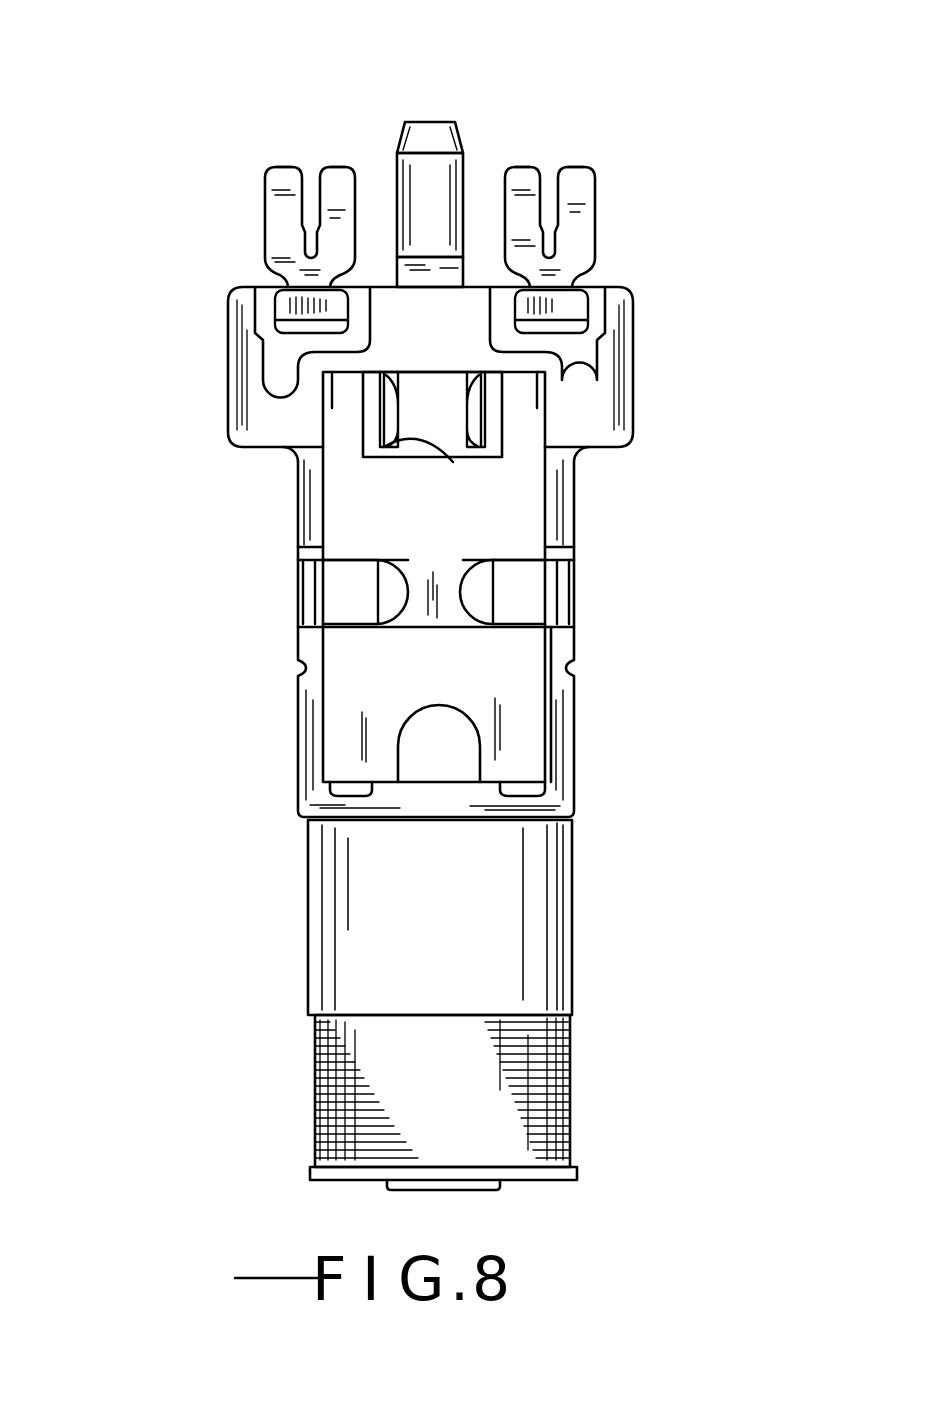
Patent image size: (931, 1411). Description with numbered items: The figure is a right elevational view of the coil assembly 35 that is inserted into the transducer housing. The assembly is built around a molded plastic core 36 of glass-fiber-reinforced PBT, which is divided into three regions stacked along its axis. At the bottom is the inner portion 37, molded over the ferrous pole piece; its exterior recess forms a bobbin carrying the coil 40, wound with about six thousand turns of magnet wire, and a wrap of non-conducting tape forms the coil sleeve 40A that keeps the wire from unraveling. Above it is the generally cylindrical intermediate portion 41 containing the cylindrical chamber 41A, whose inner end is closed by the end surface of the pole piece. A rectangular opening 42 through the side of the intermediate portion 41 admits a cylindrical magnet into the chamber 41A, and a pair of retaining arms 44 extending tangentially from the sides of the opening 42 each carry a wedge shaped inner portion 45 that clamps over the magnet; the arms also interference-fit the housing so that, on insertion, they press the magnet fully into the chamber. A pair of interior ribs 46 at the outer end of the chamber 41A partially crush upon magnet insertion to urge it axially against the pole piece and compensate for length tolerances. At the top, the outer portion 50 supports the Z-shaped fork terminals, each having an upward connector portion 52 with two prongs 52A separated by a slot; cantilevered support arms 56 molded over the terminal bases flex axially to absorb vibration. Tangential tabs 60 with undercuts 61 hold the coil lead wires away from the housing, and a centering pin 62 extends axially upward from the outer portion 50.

The coil assembly 35 is at (676, 629).
The core 36 is at (562, 702).
The inner portion 37 is at (243, 823).
The coil 40 is at (552, 1062).
The coil sleeve 40A is at (548, 903).
The intermediate portion 41 is at (185, 438).
The chamber 41A is at (505, 680).
The opening 42 is at (522, 722).
The retaining arms 44 is at (305, 598).
The wedge shaped inner portion 45 is at (523, 562).
The interior ribs 46 is at (332, 408).
The outer portion 50 is at (188, 123).
The connector portion 52 is at (283, 213).
The prongs 52A is at (334, 183).
The cantilevered support arms 56 is at (310, 300).
The tangential tabs 60 is at (462, 406).
The undercuts 61 is at (453, 462).
The centering pin 62 is at (430, 135).